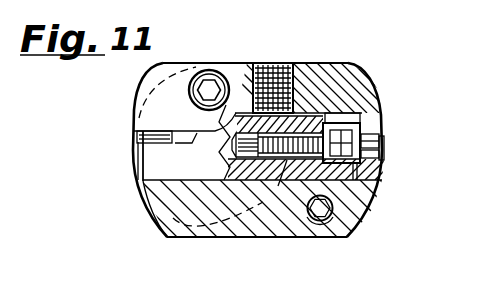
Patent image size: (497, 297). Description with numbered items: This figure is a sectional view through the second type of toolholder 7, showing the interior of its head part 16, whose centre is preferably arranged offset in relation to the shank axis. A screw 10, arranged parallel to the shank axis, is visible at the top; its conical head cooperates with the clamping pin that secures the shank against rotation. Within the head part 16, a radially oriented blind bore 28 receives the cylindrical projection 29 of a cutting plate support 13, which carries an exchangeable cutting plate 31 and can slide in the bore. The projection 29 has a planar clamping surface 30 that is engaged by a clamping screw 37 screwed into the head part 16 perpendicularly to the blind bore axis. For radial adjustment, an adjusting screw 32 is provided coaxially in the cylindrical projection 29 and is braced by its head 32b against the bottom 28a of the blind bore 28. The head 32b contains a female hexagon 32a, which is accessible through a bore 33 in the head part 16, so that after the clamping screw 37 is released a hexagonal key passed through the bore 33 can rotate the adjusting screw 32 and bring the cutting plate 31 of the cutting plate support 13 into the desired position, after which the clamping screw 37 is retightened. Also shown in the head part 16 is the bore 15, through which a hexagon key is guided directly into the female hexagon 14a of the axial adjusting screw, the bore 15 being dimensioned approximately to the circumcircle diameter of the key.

The toolholder 7 is at (136, 216).
The screw 10 is at (214, 68).
The cutting plate support 13 is at (155, 165).
The female hexagon 14a is at (322, 221).
The bore 15 is at (332, 207).
The head part 16 is at (288, 205).
The blind bore 28 is at (374, 172).
The bottom of the blind bore 28a is at (380, 124).
The cylindrical projection 29 is at (258, 160).
The planar clamping surface 30 is at (325, 113).
The cutting plate 31 is at (134, 143).
The adjusting screw 32 is at (361, 113).
The female hexagon 32a is at (386, 148).
The head of the adjusting screw 32b is at (363, 123).
The bore 33 is at (385, 152).
The clamping screw 37 is at (272, 72).